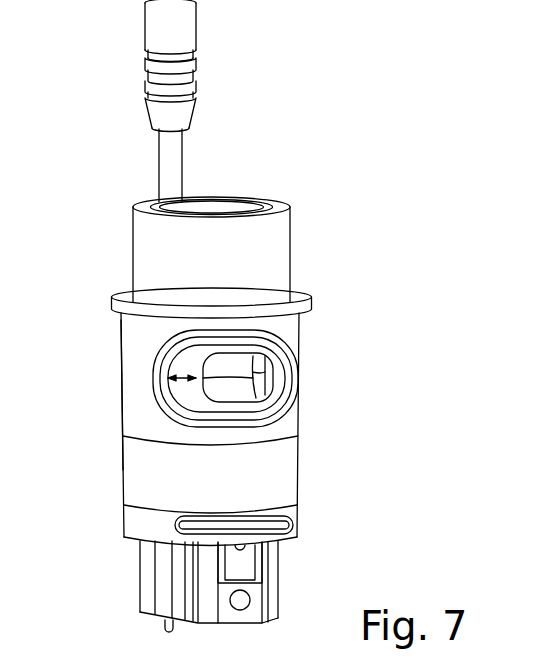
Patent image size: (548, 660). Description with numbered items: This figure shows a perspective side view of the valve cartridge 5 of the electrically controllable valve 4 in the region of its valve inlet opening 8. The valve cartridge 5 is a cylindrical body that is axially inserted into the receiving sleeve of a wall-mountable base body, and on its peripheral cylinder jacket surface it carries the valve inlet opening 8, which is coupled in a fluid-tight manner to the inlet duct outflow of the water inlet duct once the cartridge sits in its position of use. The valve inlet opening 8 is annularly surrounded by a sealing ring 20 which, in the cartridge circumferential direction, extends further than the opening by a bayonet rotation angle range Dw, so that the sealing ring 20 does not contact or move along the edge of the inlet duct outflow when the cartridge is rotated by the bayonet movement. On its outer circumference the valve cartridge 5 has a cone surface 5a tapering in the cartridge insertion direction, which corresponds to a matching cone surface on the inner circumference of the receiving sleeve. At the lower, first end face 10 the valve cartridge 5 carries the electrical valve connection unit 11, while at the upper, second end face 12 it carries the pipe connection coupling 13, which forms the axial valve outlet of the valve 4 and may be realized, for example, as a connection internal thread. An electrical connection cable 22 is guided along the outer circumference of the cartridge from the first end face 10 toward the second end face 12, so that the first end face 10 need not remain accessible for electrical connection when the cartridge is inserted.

The electrically controllable valve 4 is at (100, 351).
The valve cartridge 5 is at (298, 318).
The cone surface 5a is at (121, 388).
The valve inlet opening 8 is at (275, 378).
The first end face 10 is at (282, 545).
The electrical valve connection unit 11 is at (150, 582).
The second end face 12 is at (290, 291).
The pipe connection coupling 13 is at (268, 237).
The sealing ring 20 is at (278, 415).
The electrical connection cable 22 is at (167, 160).
The bayonet rotation angle range Dw is at (190, 381).